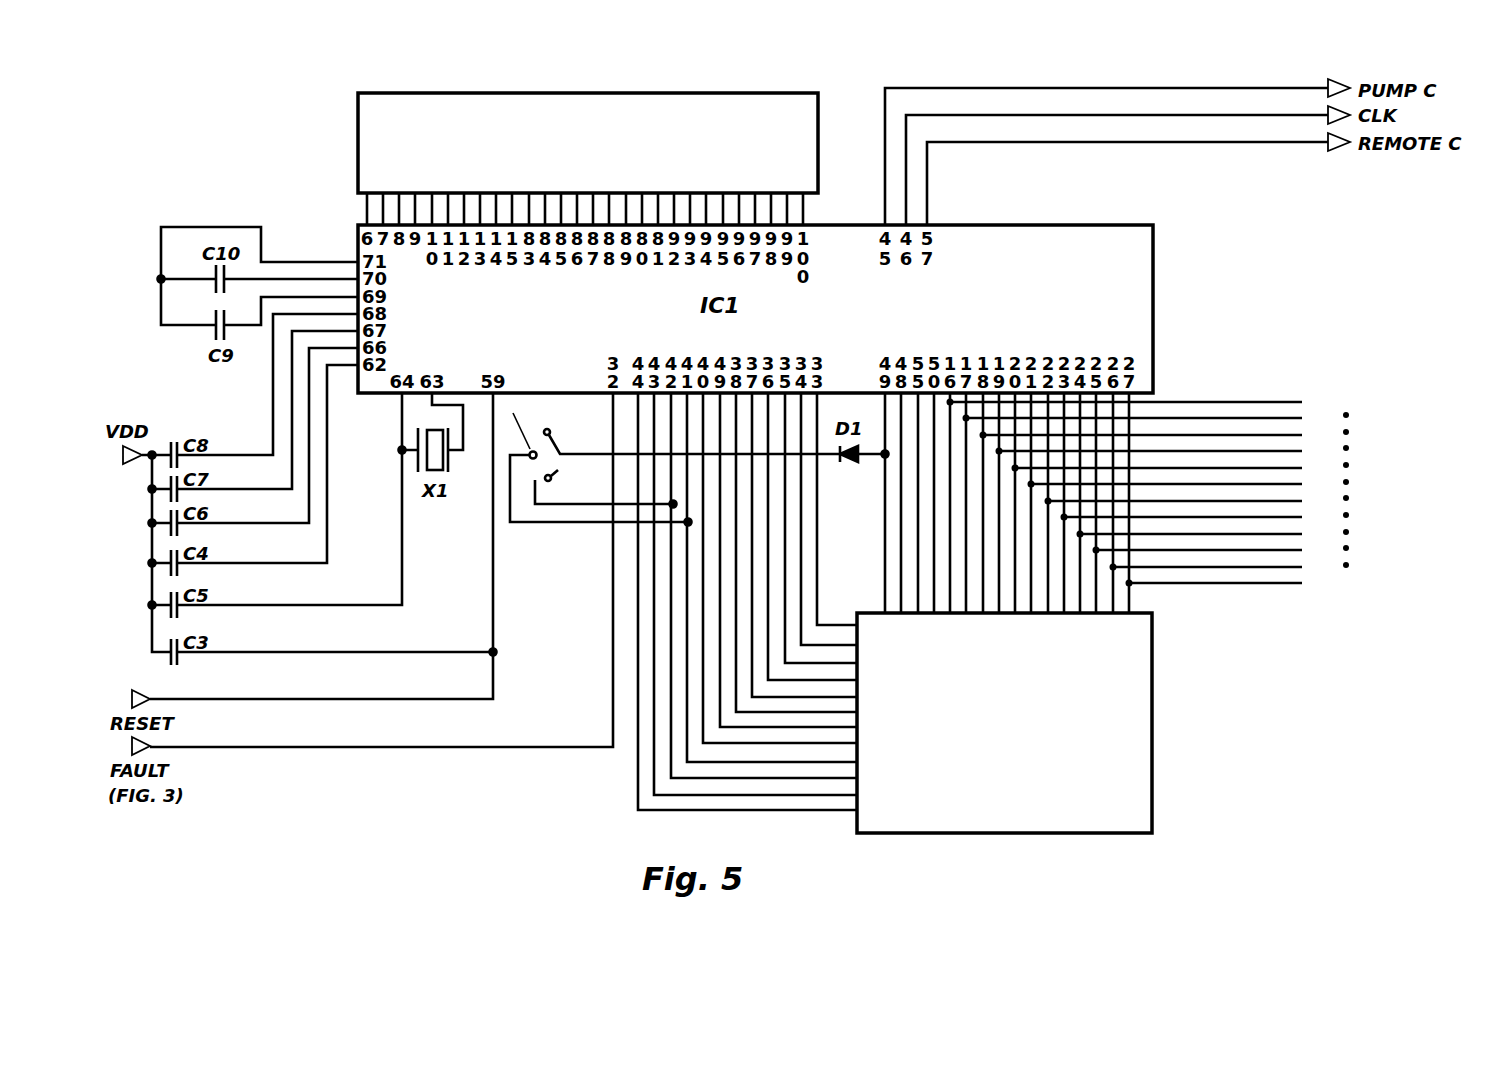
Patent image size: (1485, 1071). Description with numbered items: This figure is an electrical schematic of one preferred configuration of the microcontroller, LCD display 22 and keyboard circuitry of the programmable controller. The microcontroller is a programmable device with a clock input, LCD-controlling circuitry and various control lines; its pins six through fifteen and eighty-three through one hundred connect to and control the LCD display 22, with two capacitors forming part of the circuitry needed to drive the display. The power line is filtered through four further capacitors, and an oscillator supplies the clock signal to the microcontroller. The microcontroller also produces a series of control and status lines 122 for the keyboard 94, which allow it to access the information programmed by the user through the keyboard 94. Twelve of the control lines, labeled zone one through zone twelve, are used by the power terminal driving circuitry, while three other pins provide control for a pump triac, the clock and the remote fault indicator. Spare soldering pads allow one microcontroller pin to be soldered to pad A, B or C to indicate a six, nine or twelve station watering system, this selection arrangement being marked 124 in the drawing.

The LCD display 22 is at (513, 135).
The zone select switch 124 is at (545, 523).
The control and status lines 122 is at (1187, 586).
The keyboard 94 is at (1004, 723).